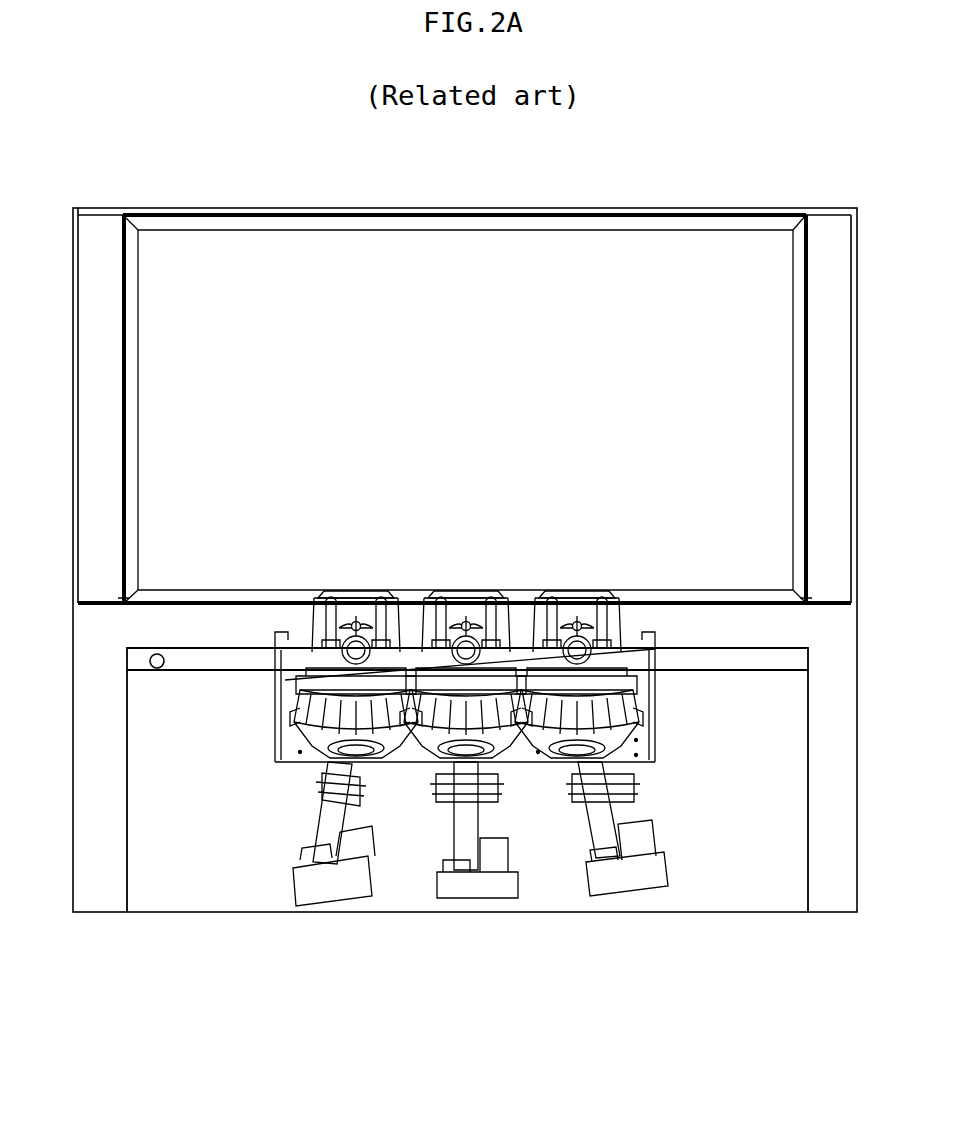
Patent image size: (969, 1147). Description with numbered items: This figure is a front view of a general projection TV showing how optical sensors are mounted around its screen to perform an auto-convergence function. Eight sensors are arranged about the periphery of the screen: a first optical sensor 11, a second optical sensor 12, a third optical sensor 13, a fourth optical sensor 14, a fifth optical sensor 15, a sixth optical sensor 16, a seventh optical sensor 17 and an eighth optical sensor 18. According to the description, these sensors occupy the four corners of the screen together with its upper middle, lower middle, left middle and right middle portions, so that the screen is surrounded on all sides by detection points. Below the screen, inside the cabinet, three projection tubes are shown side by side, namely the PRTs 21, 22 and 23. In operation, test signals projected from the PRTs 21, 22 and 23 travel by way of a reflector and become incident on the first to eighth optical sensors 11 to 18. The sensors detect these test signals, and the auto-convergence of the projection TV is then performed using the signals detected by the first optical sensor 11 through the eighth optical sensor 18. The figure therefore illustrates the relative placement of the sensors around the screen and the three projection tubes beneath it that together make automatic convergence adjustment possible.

The first optical sensor 11 is at (125, 237).
The second optical sensor 12 is at (462, 212).
The third optical sensor 13 is at (808, 236).
The fourth optical sensor 14 is at (128, 408).
The fifth optical sensor 15 is at (808, 406).
The sixth optical sensor 16 is at (125, 582).
The seventh optical sensor 17 is at (463, 600).
The eighth optical sensor 18 is at (806, 578).
The PRT 21 is at (333, 864).
The PRT 22 is at (470, 848).
The PRT 23 is at (612, 845).